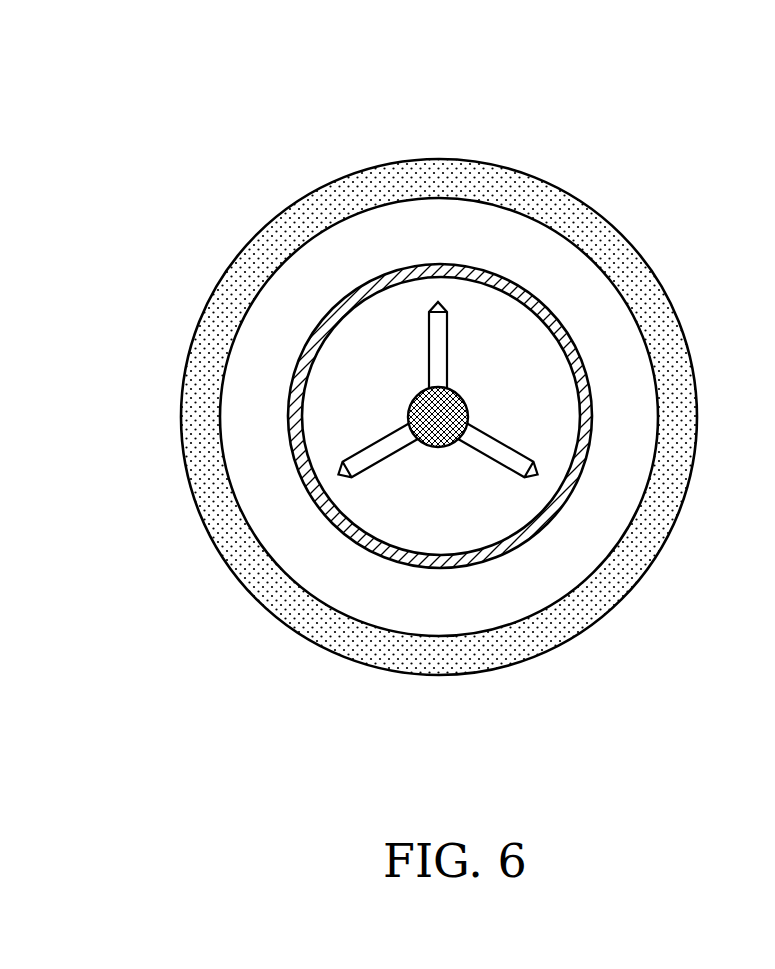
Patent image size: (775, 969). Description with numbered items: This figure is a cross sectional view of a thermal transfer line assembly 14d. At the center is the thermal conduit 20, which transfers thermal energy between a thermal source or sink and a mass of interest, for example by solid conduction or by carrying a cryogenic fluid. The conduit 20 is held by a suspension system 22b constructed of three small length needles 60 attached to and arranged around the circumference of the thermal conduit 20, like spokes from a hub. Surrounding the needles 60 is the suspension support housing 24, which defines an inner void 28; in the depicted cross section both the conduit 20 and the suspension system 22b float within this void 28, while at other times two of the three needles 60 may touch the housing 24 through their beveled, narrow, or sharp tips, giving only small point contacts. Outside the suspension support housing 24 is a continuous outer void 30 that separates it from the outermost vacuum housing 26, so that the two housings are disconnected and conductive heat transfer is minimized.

The assembly 14d is at (440, 372).
The vacuum housing 26 is at (610, 221).
The suspension support housing 24 is at (590, 383).
The suspension system 22b is at (429, 355).
The needles 60 is at (370, 453).
The inner void 28 is at (330, 480).
The outer void 30 is at (370, 592).
The thermal conduit 20 is at (438, 447).